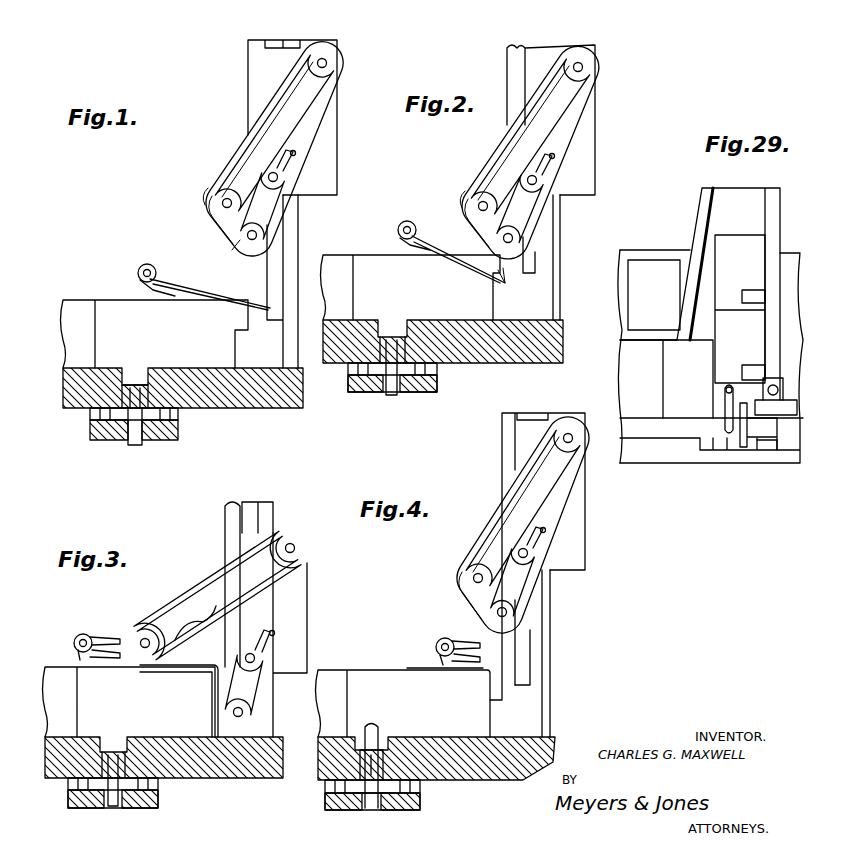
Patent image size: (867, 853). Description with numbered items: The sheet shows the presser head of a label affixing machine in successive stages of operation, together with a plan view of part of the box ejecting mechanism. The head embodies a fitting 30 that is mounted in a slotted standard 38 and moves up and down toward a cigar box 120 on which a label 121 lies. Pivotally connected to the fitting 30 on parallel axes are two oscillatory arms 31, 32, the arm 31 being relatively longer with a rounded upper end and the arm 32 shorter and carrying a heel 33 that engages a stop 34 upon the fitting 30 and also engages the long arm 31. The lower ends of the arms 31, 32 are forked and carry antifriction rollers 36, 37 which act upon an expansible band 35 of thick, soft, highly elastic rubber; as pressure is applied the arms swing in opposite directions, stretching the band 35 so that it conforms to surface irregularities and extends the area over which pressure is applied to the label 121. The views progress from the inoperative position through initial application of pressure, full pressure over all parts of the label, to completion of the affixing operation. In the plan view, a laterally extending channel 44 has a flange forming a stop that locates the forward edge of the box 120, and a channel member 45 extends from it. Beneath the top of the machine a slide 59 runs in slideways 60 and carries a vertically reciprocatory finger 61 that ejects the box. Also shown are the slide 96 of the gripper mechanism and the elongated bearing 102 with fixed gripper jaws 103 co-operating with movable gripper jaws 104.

In FIG. 1, the fitting 30 is at (330, 128).
In FIG. 2, the fitting 30 is at (583, 140).
In FIG. 3, the fitting 30 is at (282, 635).
In FIG. 4, the fitting 30 is at (570, 535).
In FIG. 1, the oscillatory arm 31 is at (290, 99).
In FIG. 2, the oscillatory arm 31 is at (530, 136).
In FIG. 3, the oscillatory arm 31 is at (217, 595).
In FIG. 4, the oscillatory arm 31 is at (523, 507).
In FIG. 1, the oscillatory arm 32 is at (266, 210).
In FIG. 2, the oscillatory arm 32 is at (525, 206).
In FIG. 3, the oscillatory arm 32 is at (246, 690).
In FIG. 4, the oscillatory arm 32 is at (513, 583).
In FIG. 1, the heel 33 is at (268, 152).
In FIG. 2, the heel 33 is at (540, 166).
In FIG. 3, the heel 33 is at (270, 626).
In FIG. 4, the heel 33 is at (540, 522).
In FIG. 1, the stop 34 is at (296, 152).
In FIG. 2, the stop 34 is at (556, 157).
In FIG. 3, the stop 34 is at (276, 633).
In FIG. 4, the stop 34 is at (547, 544).
In FIG. 1, the expansible band 35 is at (313, 48).
In FIG. 2, the expansible band 35 is at (596, 60).
In FIG. 29, the expansible band 35 is at (790, 408).
In FIG. 3, the expansible band 35 is at (218, 573).
In FIG. 4, the expansible band 35 is at (548, 556).
In FIG. 1, the antifriction roller 36 is at (204, 200).
In FIG. 2, the antifriction roller 36 is at (470, 196).
In FIG. 1, the antifriction roller 37 is at (230, 230).
In FIG. 2, the antifriction roller 37 is at (432, 232).
In FIG. 1, the slotted standard 38 is at (274, 281).
In FIG. 2, the slotted standard 38 is at (535, 257).
In FIG. 3, the slotted standard 38 is at (262, 502).
In FIG. 4, the slotted standard 38 is at (540, 630).
In FIG. 29, the channel 44 is at (770, 226).
In FIG. 29, the channel member 45 is at (645, 338).
In FIG. 1, the slide 59 is at (95, 420).
In FIG. 4, the slide 59 is at (345, 812).
In FIG. 1, the slideways 60 is at (115, 440).
In FIG. 3, the slideways 60 is at (138, 810).
In FIG. 4, the slideways 60 is at (352, 812).
In FIG. 4, the vertically reciprocatory finger 61 is at (372, 722).
In FIG. 29, the slide 96 is at (775, 452).
In FIG. 29, the elongated bearing 102 is at (740, 442).
In FIG. 1, the fixed gripper jaws 103 is at (152, 292).
In FIG. 2, the fixed gripper jaws 103 is at (410, 247).
In FIG. 3, the fixed gripper jaws 103 is at (93, 662).
In FIG. 4, the fixed gripper jaws 103 is at (452, 661).
In FIG. 1, the movable gripper jaws 104 is at (155, 265).
In FIG. 2, the movable gripper jaws 104 is at (412, 226).
In FIG. 3, the movable gripper jaws 104 is at (100, 640).
In FIG. 4, the movable gripper jaws 104 is at (445, 636).
In FIG. 1, the cigar box 120 is at (155, 334).
In FIG. 2, the cigar box 120 is at (411, 287).
In FIG. 29, the cigar box 120 is at (692, 326).
In FIG. 3, the cigar box 120 is at (129, 702).
In FIG. 4, the cigar box 120 is at (403, 703).
In FIG. 1, the label 121 is at (213, 290).
In FIG. 29, the label 121 is at (810, 303).
In FIG. 4, the label 121 is at (420, 668).